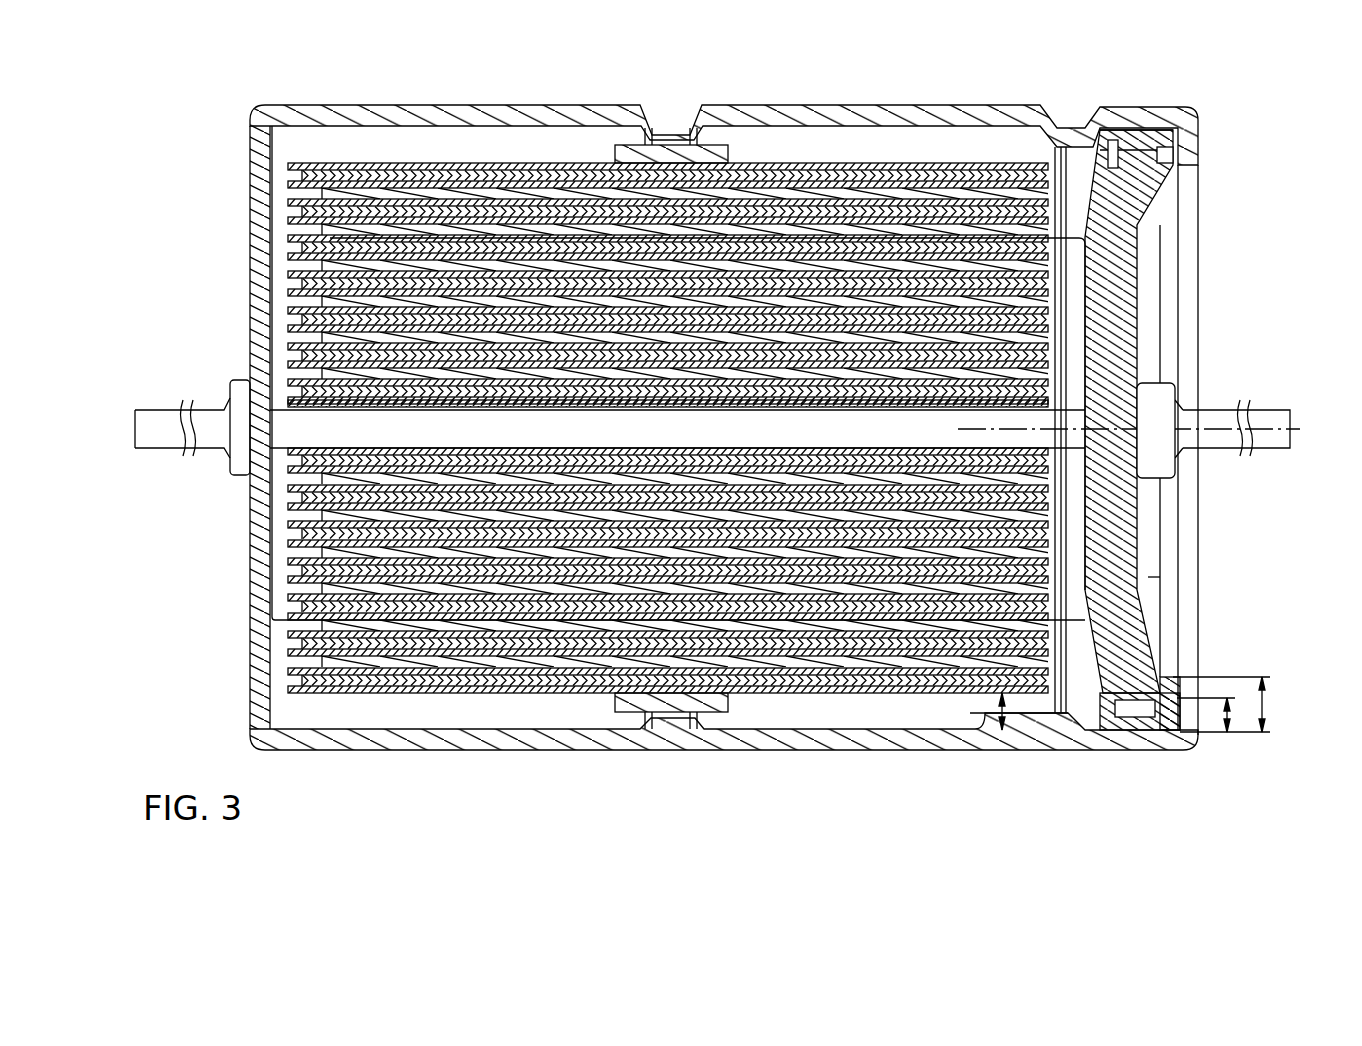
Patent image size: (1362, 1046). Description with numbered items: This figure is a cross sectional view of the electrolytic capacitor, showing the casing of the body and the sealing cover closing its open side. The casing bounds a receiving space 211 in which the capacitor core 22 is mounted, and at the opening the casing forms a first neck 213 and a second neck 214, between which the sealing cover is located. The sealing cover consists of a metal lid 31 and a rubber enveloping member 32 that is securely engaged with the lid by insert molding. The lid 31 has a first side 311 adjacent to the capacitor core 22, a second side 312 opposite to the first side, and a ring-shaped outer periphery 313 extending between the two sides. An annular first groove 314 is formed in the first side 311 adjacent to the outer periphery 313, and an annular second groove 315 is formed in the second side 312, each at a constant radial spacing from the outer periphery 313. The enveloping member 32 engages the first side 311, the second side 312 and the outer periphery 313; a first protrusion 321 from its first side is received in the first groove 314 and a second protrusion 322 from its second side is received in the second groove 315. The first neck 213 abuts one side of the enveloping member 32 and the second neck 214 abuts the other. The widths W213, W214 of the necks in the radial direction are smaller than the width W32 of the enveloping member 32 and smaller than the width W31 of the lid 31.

The receiving space 211 is at (577, 723).
The first neck 213 is at (1077, 710).
The second neck 214 is at (1187, 165).
The capacitor core 22 is at (768, 665).
The lid 31 is at (1140, 348).
The first side 311 is at (1080, 286).
The second side 312 is at (1140, 243).
The outer periphery 313 is at (1145, 135).
The first groove 314 is at (1112, 158).
The second groove 315 is at (1178, 160).
The enveloping member 32 is at (1170, 735).
The first protrusion 321 is at (1130, 708).
The second protrusion 322 is at (1168, 718).
The width of the lid W31 is at (1148, 577).
The width of the enveloping member W32 is at (1265, 700).
The width of the first neck W213 is at (973, 715).
The width of the second neck W214 is at (1237, 733).